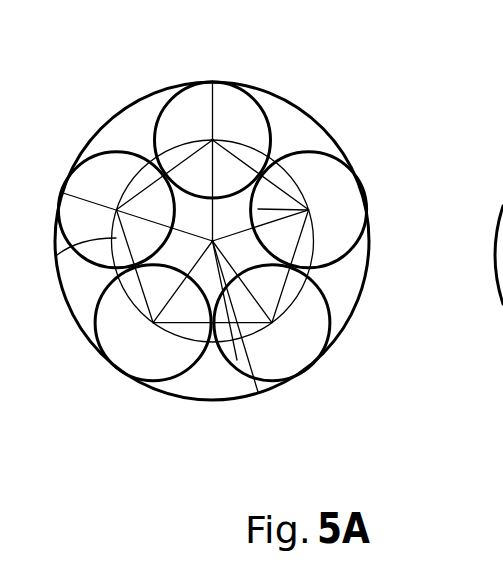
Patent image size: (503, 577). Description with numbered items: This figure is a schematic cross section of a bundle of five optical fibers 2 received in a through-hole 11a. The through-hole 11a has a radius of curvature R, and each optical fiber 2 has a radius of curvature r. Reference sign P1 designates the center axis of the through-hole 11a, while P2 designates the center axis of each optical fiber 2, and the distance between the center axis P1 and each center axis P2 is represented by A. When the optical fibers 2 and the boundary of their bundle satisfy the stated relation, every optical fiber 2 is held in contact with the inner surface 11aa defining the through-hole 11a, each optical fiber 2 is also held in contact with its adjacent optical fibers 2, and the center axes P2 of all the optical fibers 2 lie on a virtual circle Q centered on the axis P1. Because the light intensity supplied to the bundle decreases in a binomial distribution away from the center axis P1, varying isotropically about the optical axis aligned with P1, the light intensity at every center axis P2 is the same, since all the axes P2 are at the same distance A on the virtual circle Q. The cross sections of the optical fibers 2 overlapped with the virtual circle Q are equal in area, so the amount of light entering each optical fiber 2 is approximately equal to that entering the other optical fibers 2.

The optical fiber 2 is at (273, 108).
The through-hole 11a is at (272, 241).
The inner surface 11aa is at (318, 145).
The virtual circle Q is at (128, 178).
The center axis of the through-hole P1 is at (212, 240).
The center axis of each optical fiber P2 is at (213, 140).
The distance between center axes A is at (258, 208).
The radius of curvature of the through-hole R is at (227, 345).
The radius of curvature of the optical fibers r is at (57, 255).